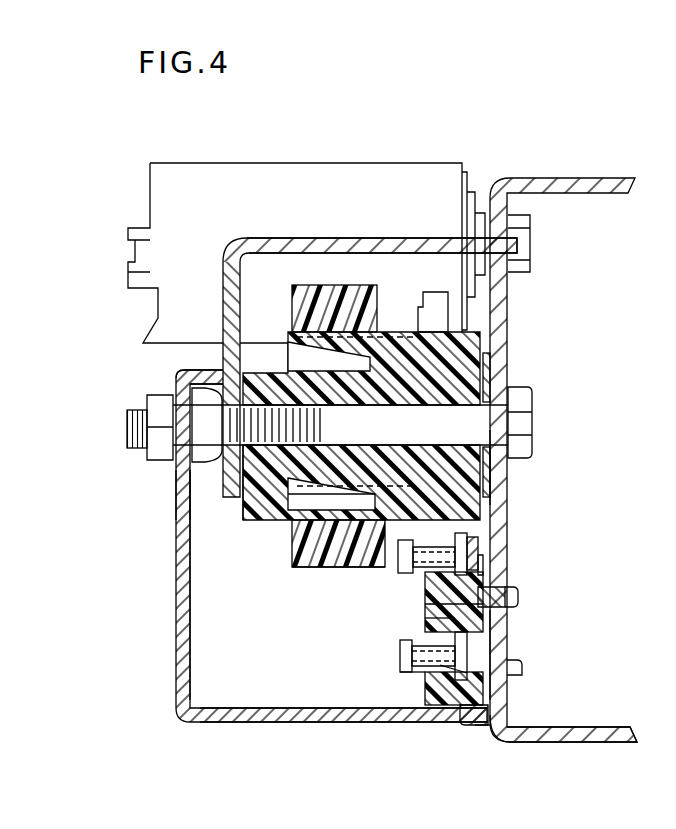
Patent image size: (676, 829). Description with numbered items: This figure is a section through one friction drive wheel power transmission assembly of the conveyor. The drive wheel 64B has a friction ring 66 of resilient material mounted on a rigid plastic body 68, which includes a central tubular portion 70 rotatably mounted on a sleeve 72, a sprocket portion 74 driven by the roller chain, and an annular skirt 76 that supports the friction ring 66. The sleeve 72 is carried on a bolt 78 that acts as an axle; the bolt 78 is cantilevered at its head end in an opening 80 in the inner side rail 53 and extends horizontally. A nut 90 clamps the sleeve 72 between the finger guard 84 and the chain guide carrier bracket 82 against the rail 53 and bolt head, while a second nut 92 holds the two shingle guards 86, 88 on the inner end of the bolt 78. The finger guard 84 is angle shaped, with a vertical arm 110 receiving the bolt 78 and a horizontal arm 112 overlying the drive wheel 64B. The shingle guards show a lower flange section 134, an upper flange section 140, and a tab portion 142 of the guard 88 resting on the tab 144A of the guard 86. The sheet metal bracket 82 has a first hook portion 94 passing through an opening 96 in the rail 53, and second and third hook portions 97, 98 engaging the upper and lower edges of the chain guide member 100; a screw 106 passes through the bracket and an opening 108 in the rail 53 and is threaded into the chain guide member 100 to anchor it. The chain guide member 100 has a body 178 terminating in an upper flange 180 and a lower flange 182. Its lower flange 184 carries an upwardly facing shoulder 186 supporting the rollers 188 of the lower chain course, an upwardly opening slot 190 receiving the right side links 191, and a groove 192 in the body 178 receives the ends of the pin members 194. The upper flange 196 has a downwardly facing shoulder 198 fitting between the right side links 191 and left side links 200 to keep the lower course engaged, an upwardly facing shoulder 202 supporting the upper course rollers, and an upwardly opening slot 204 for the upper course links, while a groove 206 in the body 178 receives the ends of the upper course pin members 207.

The inner side rail 53 is at (560, 737).
The drive wheel 64B is at (325, 575).
The friction ring 66 is at (293, 560).
The rigid plastic body 68 is at (286, 508).
The central tubular portion 70 is at (447, 465).
The sleeve 72 is at (262, 448).
The sprocket portion 74 is at (433, 307).
The annular skirt 76 is at (328, 335).
The bolt 78 is at (132, 450).
The opening 80 is at (532, 405).
The chain guide carrier bracket 82 is at (503, 467).
The finger guard 84 is at (330, 234).
The shingle guard 86 is at (196, 631).
The shingle guard 88 is at (170, 636).
The nut 90 is at (181, 492).
The second nut 92 is at (152, 460).
The first hook portion 94 is at (520, 665).
The opening 96 is at (507, 643).
The second hook portion 97 is at (418, 460).
The third hook portion 98 is at (475, 740).
The chain guide member 100 is at (418, 687).
The screw 106 is at (512, 585).
The opening 108 is at (508, 600).
The vertical arm 110 is at (222, 350).
The horizontal arm 112 is at (380, 245).
The lower flange section 134 is at (340, 723).
The upper flange section 140 is at (478, 350).
The tab portion 142 is at (180, 368).
The tab 144A is at (190, 397).
The body 178 is at (470, 540).
The upper flange 180 is at (487, 507).
The lower flange 182 is at (503, 740).
The lower flange 184 is at (445, 665).
The upwardly facing shoulder 186 is at (402, 670).
The rollers 188 is at (430, 653).
The upwardly opening slot 190 is at (433, 720).
The links 191 is at (467, 673).
The groove 192 is at (473, 645).
The pin members 194 is at (397, 647).
The upper flange 196 is at (438, 608).
The downwardly facing shoulder 198 is at (428, 618).
The left side links 200 is at (404, 677).
The upwardly facing shoulder 202 is at (442, 588).
The upwardly opening slot 204 is at (478, 568).
The groove 206 is at (483, 530).
The pin members 207 is at (402, 545).